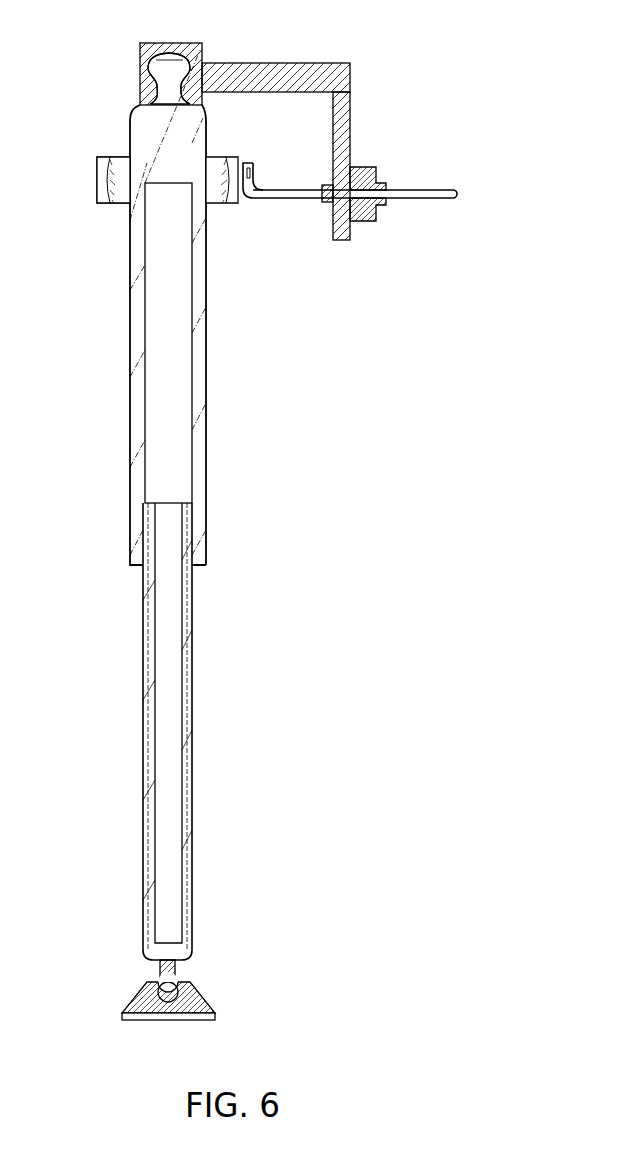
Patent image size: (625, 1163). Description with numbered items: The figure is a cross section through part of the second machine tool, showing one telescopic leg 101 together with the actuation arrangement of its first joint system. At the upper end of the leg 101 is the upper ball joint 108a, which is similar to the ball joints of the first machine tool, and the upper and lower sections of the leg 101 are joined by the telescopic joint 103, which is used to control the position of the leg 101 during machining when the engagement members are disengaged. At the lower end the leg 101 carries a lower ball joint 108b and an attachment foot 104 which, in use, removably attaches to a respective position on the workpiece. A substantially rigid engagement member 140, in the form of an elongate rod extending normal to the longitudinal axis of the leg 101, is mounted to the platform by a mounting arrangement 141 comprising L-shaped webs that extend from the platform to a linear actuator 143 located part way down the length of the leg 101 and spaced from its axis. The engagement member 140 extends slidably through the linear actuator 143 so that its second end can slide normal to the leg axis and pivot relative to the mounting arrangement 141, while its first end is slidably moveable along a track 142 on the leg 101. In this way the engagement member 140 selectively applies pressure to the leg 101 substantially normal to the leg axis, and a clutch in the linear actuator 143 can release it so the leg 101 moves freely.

The leg 101 is at (130, 313).
The telescopic joint 103 is at (130, 413).
The attachment foot 104 is at (200, 1012).
The upper ball joint 108a is at (143, 99).
The lower ball joint 108b is at (183, 980).
The engagement member 140 is at (456, 193).
The mounting arrangement 141 is at (282, 64).
The track 142 is at (223, 157).
The linear actuator 143 is at (385, 182).